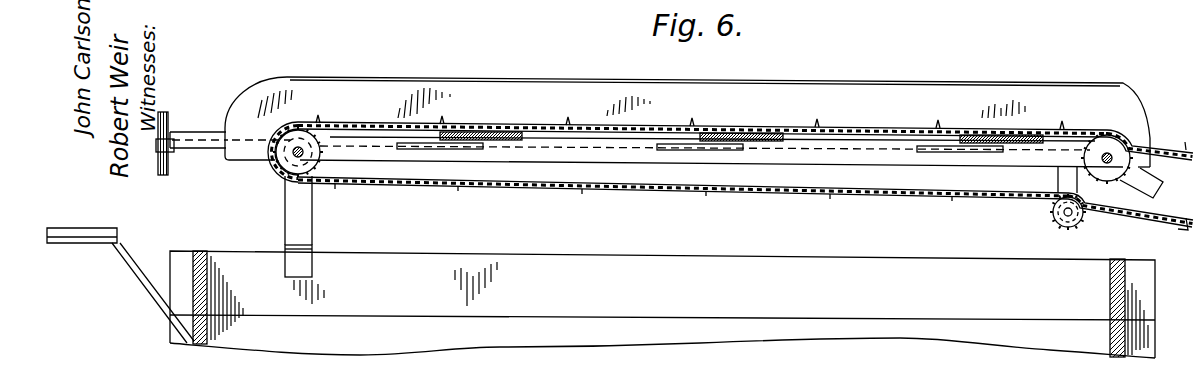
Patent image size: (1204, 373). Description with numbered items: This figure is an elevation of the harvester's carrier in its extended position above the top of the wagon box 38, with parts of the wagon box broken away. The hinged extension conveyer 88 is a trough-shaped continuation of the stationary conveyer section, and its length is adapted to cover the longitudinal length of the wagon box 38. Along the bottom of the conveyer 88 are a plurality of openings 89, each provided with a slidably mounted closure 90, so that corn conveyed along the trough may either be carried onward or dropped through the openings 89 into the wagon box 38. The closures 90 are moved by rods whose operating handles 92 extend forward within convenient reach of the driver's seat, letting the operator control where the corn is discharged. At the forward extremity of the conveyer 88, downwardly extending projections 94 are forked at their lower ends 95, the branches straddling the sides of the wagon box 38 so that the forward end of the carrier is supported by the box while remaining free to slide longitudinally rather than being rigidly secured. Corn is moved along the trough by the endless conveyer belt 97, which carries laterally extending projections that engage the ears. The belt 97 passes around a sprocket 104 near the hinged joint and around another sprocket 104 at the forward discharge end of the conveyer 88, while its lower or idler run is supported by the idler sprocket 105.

The extension conveyer 88 is at (940, 90).
The endless conveyer belt 97 is at (363, 122).
The openings 89 is at (448, 145).
The closures 90 is at (510, 143).
The sprocket 104 is at (283, 163).
The idler sprocket 105 is at (1092, 231).
The operating handles 92 is at (159, 140).
The downwardly extending projections 94 is at (287, 208).
The forked lower extremities 95 is at (292, 262).
The wagon box 38 is at (841, 312).